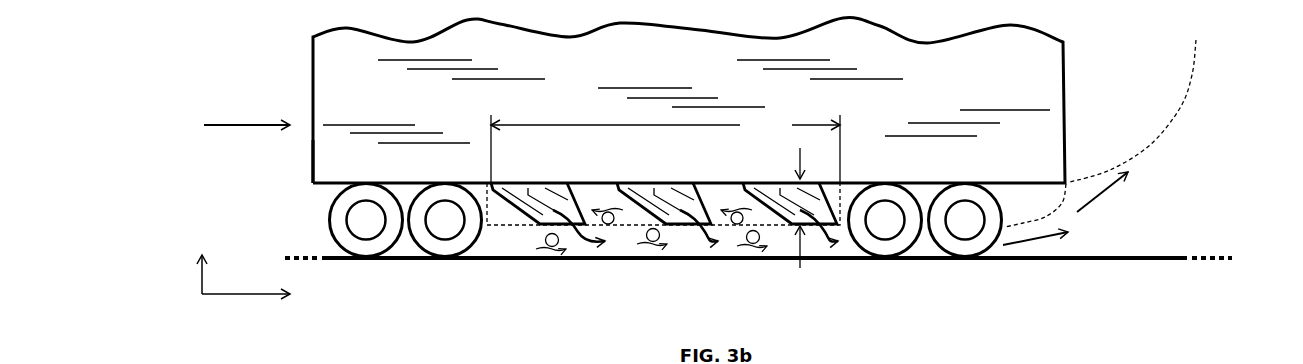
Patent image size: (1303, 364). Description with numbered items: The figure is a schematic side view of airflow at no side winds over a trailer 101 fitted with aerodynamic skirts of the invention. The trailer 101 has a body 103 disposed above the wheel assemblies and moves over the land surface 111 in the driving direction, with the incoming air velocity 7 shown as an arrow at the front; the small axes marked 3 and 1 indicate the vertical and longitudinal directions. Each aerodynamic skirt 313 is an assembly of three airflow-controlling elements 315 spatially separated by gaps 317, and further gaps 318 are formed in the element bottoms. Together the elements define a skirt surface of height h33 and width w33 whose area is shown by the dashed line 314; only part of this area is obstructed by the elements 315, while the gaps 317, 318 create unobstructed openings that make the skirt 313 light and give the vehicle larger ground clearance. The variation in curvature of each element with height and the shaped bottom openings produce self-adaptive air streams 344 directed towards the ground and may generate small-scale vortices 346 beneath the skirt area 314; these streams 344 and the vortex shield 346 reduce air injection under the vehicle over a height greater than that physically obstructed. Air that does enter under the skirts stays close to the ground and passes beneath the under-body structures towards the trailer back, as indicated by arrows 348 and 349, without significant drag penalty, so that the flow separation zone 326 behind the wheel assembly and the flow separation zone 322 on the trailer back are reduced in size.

The trailer 101 is at (297, 60).
The body 103 is at (310, 152).
The air velocity 7 is at (247, 109).
The vertical axis direction 3 is at (214, 271).
The longitudinal axis direction 1 is at (254, 293).
The land surface 111 is at (1107, 260).
The aerodynamic skirt 313 is at (649, 209).
The skirt surface area 314 is at (505, 226).
The airflow-controlling element 315 is at (535, 182).
The gap 317 is at (725, 192).
The gap in element bottom 318 is at (773, 222).
The air stream 344 is at (583, 248).
The small-scale vortex 346 is at (643, 255).
The flow separation zone 322 is at (1180, 103).
The flow separation zone 326 is at (1058, 205).
The arrow 348 is at (1057, 236).
The arrow 349 is at (1120, 192).